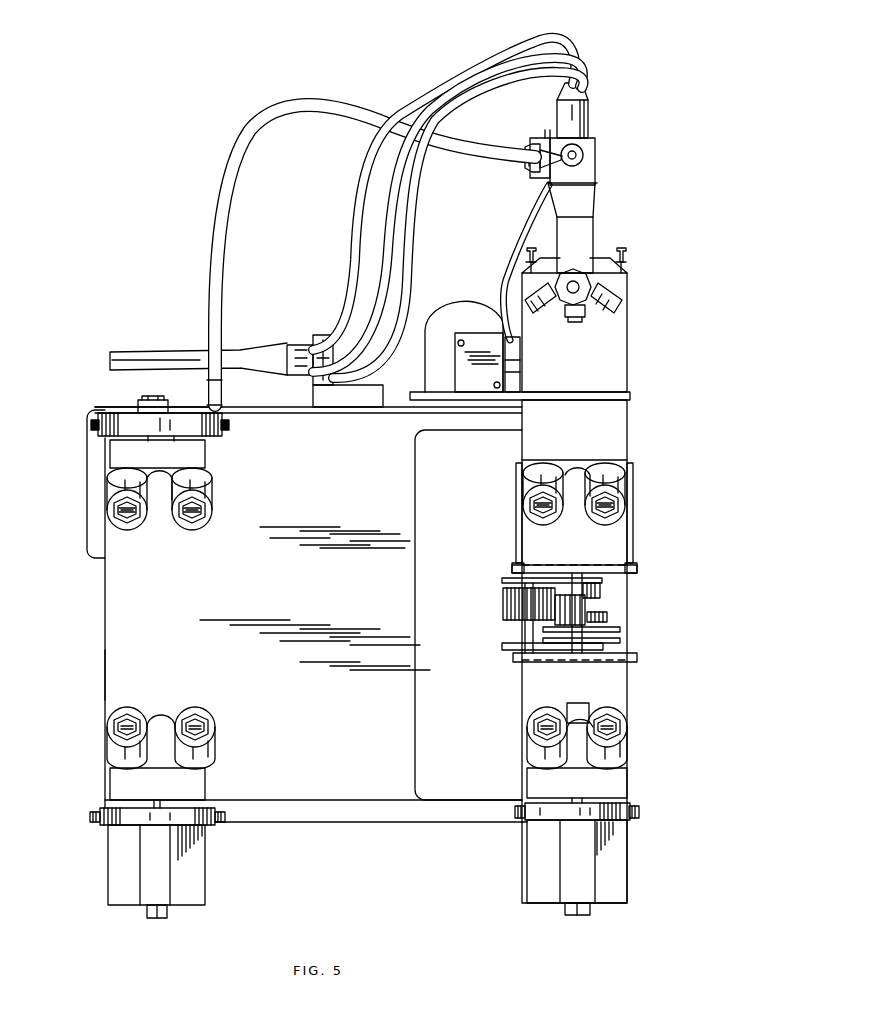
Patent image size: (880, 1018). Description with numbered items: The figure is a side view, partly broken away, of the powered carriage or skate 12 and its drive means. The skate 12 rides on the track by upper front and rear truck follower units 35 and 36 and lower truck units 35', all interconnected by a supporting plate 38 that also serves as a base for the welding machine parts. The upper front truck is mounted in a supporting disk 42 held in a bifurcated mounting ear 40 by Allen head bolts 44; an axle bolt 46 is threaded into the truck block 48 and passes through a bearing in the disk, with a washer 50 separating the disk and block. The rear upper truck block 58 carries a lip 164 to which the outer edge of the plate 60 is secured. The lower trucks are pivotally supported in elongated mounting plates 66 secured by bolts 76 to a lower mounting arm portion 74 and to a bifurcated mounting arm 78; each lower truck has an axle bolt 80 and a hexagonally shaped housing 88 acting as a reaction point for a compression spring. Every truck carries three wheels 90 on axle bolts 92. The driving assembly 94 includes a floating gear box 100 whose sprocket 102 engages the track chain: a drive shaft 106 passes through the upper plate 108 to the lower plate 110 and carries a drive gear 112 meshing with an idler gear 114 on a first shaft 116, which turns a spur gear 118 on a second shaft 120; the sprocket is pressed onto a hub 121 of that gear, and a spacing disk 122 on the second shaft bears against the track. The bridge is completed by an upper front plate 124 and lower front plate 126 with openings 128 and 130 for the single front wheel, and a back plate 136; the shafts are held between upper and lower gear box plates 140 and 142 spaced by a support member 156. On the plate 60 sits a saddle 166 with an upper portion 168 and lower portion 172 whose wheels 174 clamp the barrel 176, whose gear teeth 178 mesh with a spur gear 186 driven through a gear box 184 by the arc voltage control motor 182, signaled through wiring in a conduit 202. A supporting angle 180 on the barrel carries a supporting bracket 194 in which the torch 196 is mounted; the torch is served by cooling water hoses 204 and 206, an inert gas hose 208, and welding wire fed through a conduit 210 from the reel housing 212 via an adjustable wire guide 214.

The powered carriage 12 is at (94, 647).
The upper front truck follower unit 35 is at (247, 468).
The lower front and rear truck units 35' is at (373, 775).
The upper rear truck follower unit 36 is at (619, 464).
The supporting plate 38 is at (308, 598).
The bifurcated mounting ear 40 is at (98, 412).
The supporting disk 42 is at (128, 410).
The Allen head bolts 44 is at (91, 425).
The axle bolt 46 is at (156, 401).
The truck block 48 is at (190, 458).
The washer 50 is at (148, 441).
The truck block 58 is at (520, 462).
The plate 60 is at (627, 395).
The elongated mounting plates 66 is at (205, 808).
The lower bifurcated mounting arm portion 74 is at (639, 810).
The bolts 76 is at (90, 822).
The bifurcated mounting arm 78 is at (100, 810).
The axle bolt 80 is at (155, 920).
The hexagonally shaped housing 88 is at (195, 893).
The wheels 90 is at (118, 487).
The axle bolts 92 is at (190, 520).
The driving assembly 94 is at (490, 582).
The floating gear box 100 is at (508, 562).
The sprocket 102 is at (627, 630).
The drive shaft 106 is at (543, 629).
The upper plate 108 is at (628, 570).
The lower plate 110 is at (627, 664).
The drive gear 112 is at (600, 590).
The idler gear 114 is at (506, 600).
The first shaft 116 is at (555, 622).
The spur gear 118 is at (620, 640).
The second shaft 120 is at (576, 600).
The hub 121 is at (543, 633).
The spacing disk 122 is at (627, 655).
The upper front plate 124 is at (530, 545).
The lower front plate 126 is at (535, 665).
The opening 128 is at (570, 525).
The opening 130 is at (578, 703).
The back plate 136 is at (600, 608).
The upper gear box plate 140 is at (503, 580).
The lower gear box plate 142 is at (502, 649).
The gear box plate spacing and support member 156 is at (607, 615).
The lip 164 is at (588, 370).
The saddle 166 is at (638, 282).
The upper portion 168 is at (587, 246).
The lower portion 172 is at (612, 338).
The wheels 174 is at (526, 292).
The barrel 176 is at (626, 268).
The gear teeth 178 is at (558, 305).
The supporting angle 180 is at (590, 236).
The arc voltage control motor 182 is at (462, 300).
The gear box 184 is at (412, 375).
The spur gear 186 is at (568, 322).
The valve block 194 is at (595, 175).
The torch 196 is at (583, 152).
The conduit 202 is at (528, 243).
The hose 204 is at (372, 335).
The second hose 206 is at (370, 360).
The third hose 208 is at (370, 143).
The conduit 210 is at (265, 136).
The housing 212 is at (88, 460).
The adjustable wire guide 214 is at (538, 140).